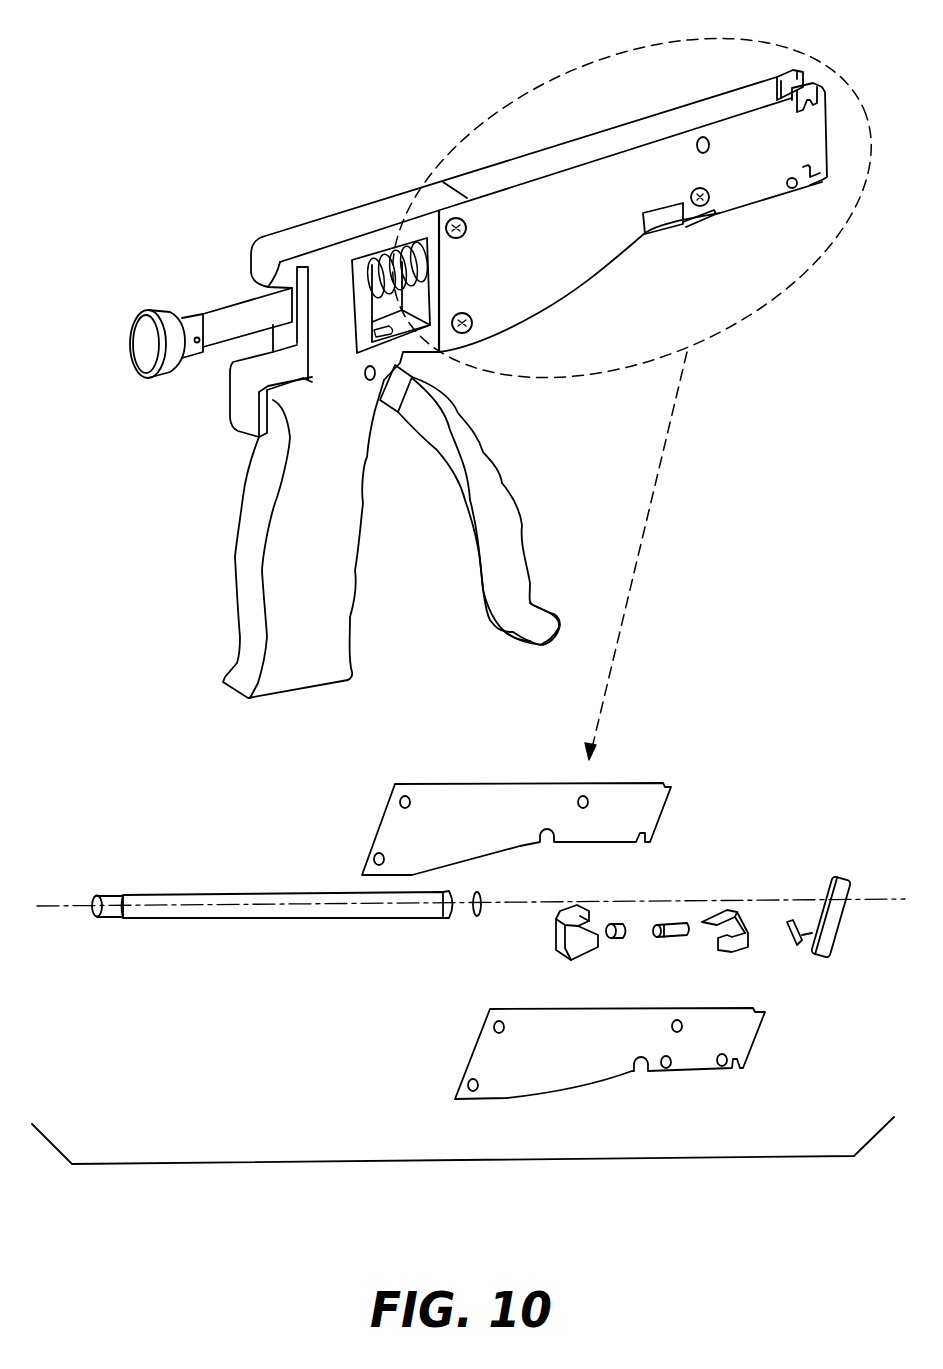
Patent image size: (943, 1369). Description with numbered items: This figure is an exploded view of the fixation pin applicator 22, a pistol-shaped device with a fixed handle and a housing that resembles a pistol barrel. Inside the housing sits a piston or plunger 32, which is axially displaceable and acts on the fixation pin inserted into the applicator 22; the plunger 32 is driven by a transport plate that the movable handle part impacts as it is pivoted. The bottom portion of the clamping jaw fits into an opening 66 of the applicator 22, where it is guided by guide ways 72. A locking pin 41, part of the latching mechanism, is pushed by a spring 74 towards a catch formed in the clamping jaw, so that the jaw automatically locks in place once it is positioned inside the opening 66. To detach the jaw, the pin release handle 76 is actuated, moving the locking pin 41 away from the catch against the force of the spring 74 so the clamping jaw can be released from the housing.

The fixation pin applicator 22 is at (447, 165).
The opening 66 is at (698, 103).
The plunger 32 is at (223, 892).
The guide ways 72 is at (556, 927).
The spring 74 is at (618, 924).
The locking pin 41 is at (677, 924).
The pin release handle 76 is at (746, 922).